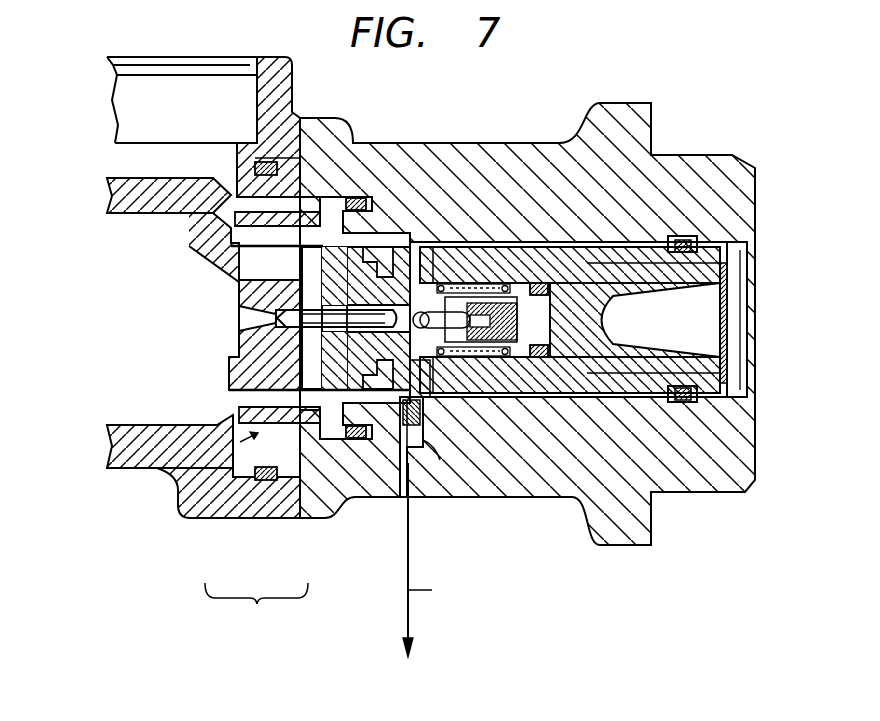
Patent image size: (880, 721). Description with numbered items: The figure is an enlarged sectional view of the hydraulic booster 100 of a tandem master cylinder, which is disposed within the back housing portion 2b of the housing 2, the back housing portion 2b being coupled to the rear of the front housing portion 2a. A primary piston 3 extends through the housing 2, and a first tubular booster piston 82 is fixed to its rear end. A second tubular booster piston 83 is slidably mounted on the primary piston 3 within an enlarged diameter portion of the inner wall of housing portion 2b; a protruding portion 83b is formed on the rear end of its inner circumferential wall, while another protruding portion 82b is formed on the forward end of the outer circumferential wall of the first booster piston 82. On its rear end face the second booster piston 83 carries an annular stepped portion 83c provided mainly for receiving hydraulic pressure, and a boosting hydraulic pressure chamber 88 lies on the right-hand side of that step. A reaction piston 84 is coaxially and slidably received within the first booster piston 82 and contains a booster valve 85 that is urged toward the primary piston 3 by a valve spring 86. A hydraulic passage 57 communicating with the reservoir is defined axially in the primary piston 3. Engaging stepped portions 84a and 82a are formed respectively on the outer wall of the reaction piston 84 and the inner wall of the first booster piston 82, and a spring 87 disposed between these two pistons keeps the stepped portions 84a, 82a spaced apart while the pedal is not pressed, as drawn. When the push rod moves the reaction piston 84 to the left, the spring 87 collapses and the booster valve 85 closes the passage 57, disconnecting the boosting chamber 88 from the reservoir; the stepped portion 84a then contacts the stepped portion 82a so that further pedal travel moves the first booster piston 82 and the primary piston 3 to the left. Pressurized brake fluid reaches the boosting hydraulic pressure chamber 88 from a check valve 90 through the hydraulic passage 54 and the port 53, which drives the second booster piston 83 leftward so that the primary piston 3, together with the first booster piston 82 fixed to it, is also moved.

The housing 2 is at (264, 637).
The front housing portion 2a is at (228, 520).
The back housing portion 2b is at (317, 507).
The primary piston 3 is at (434, 400).
The port 53 is at (421, 450).
The hydraulic passage 54 is at (443, 592).
The hydraulic passage 57 is at (392, 298).
The first tubular booster piston 82 is at (527, 403).
The engaging stepped portion 82a is at (601, 393).
The protruding portion 82b is at (415, 433).
The second tubular booster piston 83 is at (330, 203).
The protruding portion 83b is at (405, 247).
The annular stepped portion 83c is at (397, 460).
The reaction piston 84 is at (533, 283).
The engaging stepped portion 84a is at (584, 247).
The booster valve 85 is at (430, 267).
The valve spring 86 is at (478, 357).
The spring 87 is at (500, 284).
The boosting hydraulic pressure chamber 88 is at (432, 425).
The check valve 90 is at (409, 576).
The hydraulic booster 100 is at (177, 483).